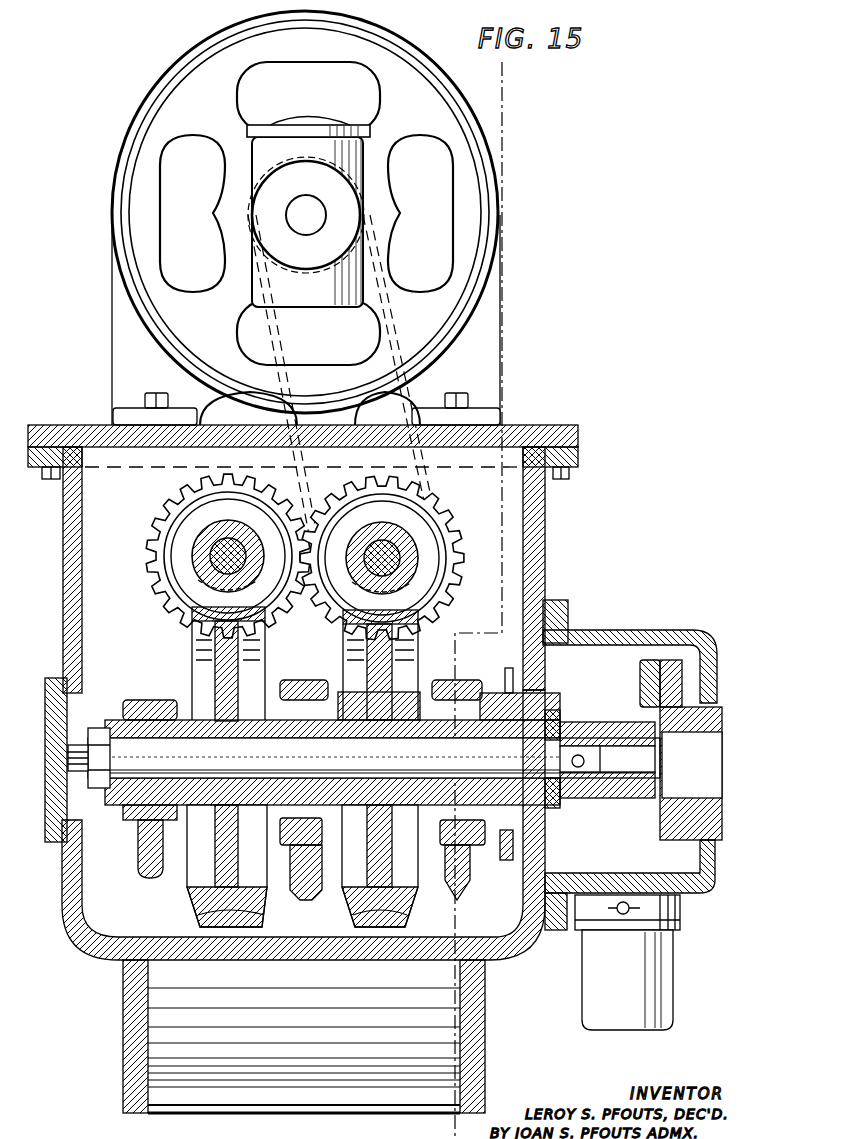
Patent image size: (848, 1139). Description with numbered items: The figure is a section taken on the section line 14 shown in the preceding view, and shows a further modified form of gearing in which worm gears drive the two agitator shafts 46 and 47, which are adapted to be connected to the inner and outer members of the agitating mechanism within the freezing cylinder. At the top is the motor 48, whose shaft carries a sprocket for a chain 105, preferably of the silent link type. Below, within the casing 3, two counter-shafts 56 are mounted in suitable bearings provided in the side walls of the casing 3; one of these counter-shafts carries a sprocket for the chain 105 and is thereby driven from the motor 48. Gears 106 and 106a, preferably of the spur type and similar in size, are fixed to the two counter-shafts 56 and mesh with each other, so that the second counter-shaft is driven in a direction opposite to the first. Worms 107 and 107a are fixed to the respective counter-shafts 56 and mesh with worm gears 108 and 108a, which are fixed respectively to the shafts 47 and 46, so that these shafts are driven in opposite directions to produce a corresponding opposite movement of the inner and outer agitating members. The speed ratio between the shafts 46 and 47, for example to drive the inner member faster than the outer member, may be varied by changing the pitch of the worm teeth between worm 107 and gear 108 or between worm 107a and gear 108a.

The figure section line 14 is at (503, 57).
The motor 48 is at (425, 365).
The chain 105 is at (290, 417).
The spur gear 106a is at (263, 500).
The spur gear 106 is at (356, 505).
The worm 107a is at (185, 572).
The worm 107 is at (423, 580).
The counter-shafts 56 is at (460, 537).
The worm gear 108a is at (197, 681).
The worm gear 108 is at (398, 676).
The shaft 46 is at (117, 798).
The shaft 47 is at (362, 797).
The casing 3 is at (85, 942).